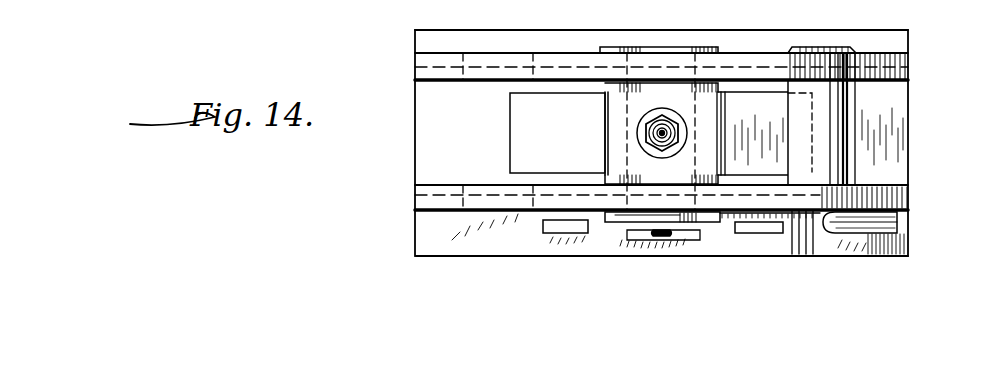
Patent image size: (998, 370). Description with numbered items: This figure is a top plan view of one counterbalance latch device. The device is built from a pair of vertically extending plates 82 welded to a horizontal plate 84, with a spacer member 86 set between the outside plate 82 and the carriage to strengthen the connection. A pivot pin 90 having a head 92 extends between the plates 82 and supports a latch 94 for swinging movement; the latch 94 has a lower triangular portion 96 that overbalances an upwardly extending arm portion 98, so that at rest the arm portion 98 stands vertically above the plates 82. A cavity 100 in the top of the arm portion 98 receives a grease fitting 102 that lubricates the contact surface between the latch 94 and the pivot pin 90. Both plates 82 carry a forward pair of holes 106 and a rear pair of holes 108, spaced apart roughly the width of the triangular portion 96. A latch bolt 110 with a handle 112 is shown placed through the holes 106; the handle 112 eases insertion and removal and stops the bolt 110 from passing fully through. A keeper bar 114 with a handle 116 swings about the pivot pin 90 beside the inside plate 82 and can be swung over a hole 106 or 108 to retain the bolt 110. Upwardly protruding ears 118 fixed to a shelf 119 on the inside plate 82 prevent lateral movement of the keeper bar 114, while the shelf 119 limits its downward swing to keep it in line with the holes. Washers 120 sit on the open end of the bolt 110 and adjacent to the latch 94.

The vertically extending plate 82 is at (930, 197).
The horizontal plate 84 is at (416, 147).
The spacer member 86 is at (897, 40).
The pivot pin 90 is at (672, 241).
The head 92 is at (714, 47).
The latch 94 is at (502, 149).
The triangular portion 96 is at (575, 143).
The arm portion 98 is at (606, 157).
The cavity 100 is at (650, 147).
The grease fitting 102 is at (690, 110).
The holes 106 is at (920, 168).
The holes 108 is at (472, 195).
The latch bolt 110 is at (838, 118).
The handle 112 is at (900, 222).
The keeper bar 114 is at (736, 216).
The handle 116 is at (805, 250).
The ears 118 is at (557, 230).
The shelf 119 is at (425, 242).
The washers 120 is at (613, 227).